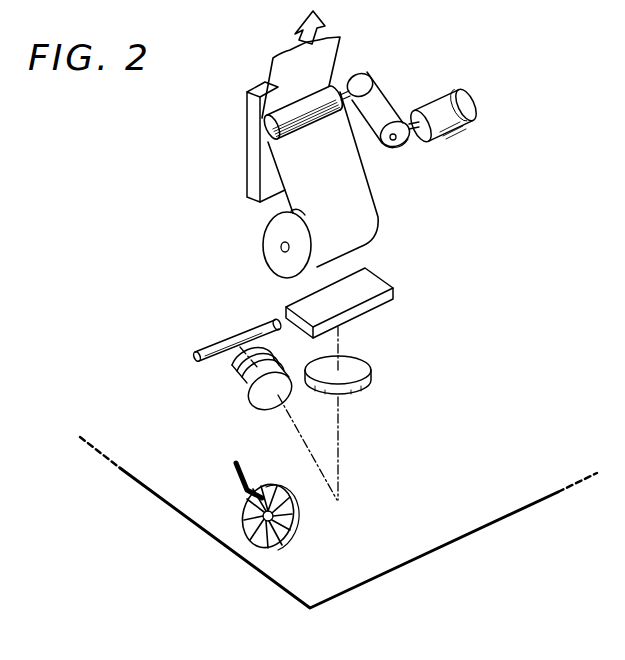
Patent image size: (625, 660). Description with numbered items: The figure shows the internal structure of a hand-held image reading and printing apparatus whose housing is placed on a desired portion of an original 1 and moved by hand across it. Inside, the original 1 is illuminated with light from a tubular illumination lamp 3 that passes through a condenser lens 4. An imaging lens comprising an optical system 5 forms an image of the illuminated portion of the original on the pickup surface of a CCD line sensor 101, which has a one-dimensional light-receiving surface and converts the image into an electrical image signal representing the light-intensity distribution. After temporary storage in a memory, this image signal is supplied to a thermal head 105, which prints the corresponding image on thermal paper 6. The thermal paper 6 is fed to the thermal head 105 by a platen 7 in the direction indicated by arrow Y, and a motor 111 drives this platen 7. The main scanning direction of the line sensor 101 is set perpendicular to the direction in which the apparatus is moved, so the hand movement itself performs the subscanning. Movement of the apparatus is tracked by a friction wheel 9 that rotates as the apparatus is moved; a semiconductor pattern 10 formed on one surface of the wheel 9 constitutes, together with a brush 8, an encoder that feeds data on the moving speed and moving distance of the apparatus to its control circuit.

The original 1 is at (457, 533).
The tubular illumination lamp 3 is at (225, 340).
The condenser lens 4 is at (230, 377).
The optical system 5 is at (365, 360).
The thermal paper 6 is at (342, 50).
The platen 7 is at (310, 127).
The brush 8 is at (235, 473).
The friction wheel 9 is at (293, 548).
The semiconductor pattern 10 is at (288, 518).
The CCD line sensor 101 is at (375, 283).
The thermal head 105 is at (251, 115).
The motor 111 is at (462, 125).
The arrow Y is at (325, 20).